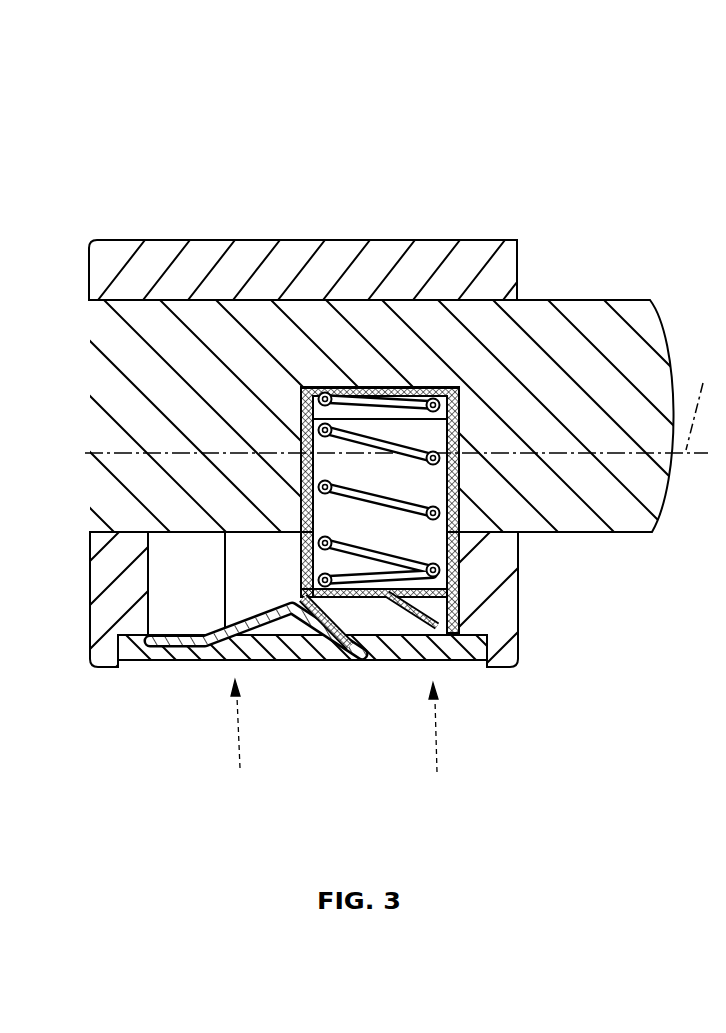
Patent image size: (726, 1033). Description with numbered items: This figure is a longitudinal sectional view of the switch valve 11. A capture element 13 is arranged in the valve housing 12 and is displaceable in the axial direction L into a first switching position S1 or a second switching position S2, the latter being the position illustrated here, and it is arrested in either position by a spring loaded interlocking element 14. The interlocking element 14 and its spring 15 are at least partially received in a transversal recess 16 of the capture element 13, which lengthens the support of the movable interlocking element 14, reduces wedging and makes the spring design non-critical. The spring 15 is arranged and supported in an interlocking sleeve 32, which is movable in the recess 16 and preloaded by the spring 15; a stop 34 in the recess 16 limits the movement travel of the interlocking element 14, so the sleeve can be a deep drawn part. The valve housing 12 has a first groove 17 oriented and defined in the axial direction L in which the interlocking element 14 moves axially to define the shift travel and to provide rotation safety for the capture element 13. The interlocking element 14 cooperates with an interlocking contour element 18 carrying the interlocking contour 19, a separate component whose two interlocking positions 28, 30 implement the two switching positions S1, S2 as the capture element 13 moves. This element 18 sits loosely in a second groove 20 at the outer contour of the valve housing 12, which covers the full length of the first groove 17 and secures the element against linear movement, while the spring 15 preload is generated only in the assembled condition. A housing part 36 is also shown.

The switch valve 11 is at (401, 296).
The valve housing 12 is at (373, 228).
The capture element 13 is at (567, 287).
The interlocking element 14 is at (478, 591).
The spring 15 is at (301, 547).
The transversal recess 16 is at (338, 393).
The first groove 17 is at (184, 645).
The interlocking contour element 18 is at (380, 672).
The interlocking contour 19 is at (240, 611).
The second groove 20 is at (153, 667).
The interlocking position 28 is at (334, 649).
The interlocking position 30 is at (204, 632).
The interlocking sleeve 32 is at (459, 563).
The stop 34 is at (462, 408).
The spring housing 36 is at (240, 300).
The axial direction L is at (399, 401).
The first switching position S1 is at (439, 743).
The second switching position S2 is at (241, 738).